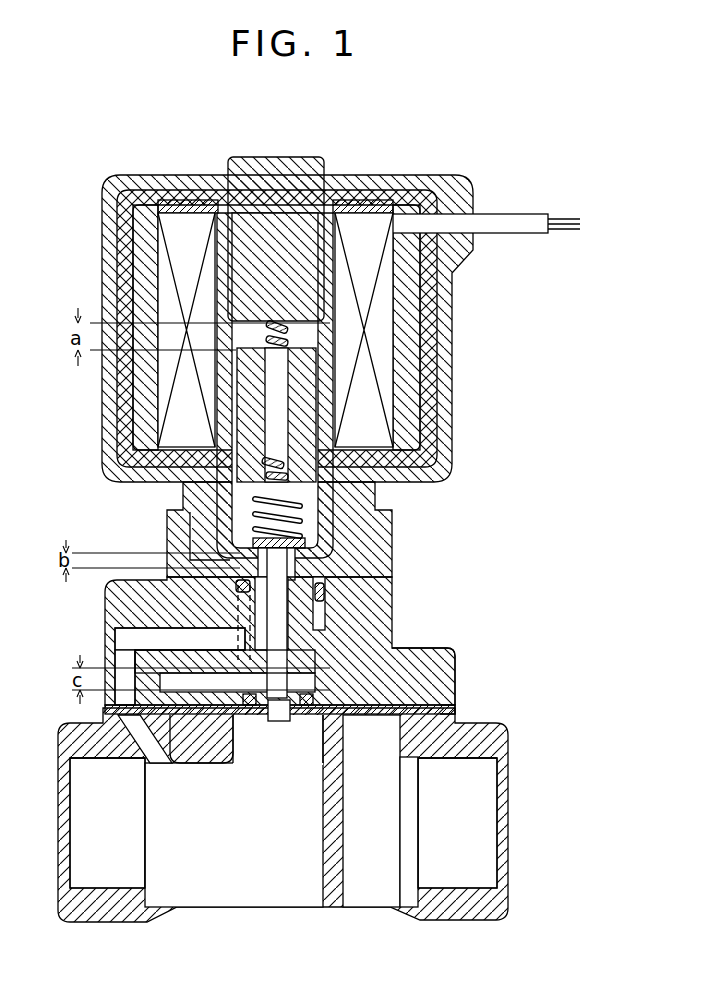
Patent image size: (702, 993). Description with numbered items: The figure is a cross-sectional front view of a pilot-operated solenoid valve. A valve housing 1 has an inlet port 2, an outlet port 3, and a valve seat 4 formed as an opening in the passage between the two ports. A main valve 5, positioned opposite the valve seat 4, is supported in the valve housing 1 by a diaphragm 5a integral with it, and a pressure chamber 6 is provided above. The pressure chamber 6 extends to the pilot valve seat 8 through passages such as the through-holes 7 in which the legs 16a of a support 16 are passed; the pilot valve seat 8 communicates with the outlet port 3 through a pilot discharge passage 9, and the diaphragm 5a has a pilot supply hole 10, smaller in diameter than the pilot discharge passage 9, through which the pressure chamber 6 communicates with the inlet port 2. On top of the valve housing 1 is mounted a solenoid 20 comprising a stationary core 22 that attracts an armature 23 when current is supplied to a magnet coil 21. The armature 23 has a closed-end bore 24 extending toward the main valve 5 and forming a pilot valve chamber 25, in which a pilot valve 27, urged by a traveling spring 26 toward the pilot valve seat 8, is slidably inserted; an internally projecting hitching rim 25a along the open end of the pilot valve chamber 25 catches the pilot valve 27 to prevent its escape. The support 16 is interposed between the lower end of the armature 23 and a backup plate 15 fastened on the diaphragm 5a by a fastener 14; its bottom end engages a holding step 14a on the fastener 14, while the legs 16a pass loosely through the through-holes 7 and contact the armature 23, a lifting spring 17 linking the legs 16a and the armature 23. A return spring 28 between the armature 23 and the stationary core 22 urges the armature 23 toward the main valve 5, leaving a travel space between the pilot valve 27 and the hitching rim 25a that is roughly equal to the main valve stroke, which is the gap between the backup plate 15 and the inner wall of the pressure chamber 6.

The valve housing 1 is at (470, 685).
The inlet port 2 is at (490, 812).
The outlet port 3 is at (85, 812).
The valve seat 4 is at (228, 722).
The main valve 5 is at (300, 724).
The diaphragm 5a is at (456, 713).
The pressure chamber 6 is at (390, 668).
The through-holes 7 is at (322, 623).
The pilot valve seat 8 is at (240, 543).
The pilot discharge passage 9 is at (120, 646).
The pilot supply hole 10 is at (384, 712).
The fastener 14 is at (276, 724).
The holding step 14a is at (240, 652).
The backup plate 15 is at (124, 716).
The support 16 is at (345, 715).
The legs 16a is at (326, 590).
The lifting spring 17 is at (238, 587).
The solenoid 20 is at (428, 153).
The magnet coil 21 is at (380, 345).
The stationary core 22 is at (285, 160).
The armature 23 is at (325, 405).
The closed-end bore 24 is at (240, 500).
The pilot valve chamber 25 is at (300, 560).
The hitching rim 25a is at (282, 580).
The traveling spring 26 is at (258, 505).
The pilot valve 27 is at (292, 540).
The return spring 28 is at (252, 400).